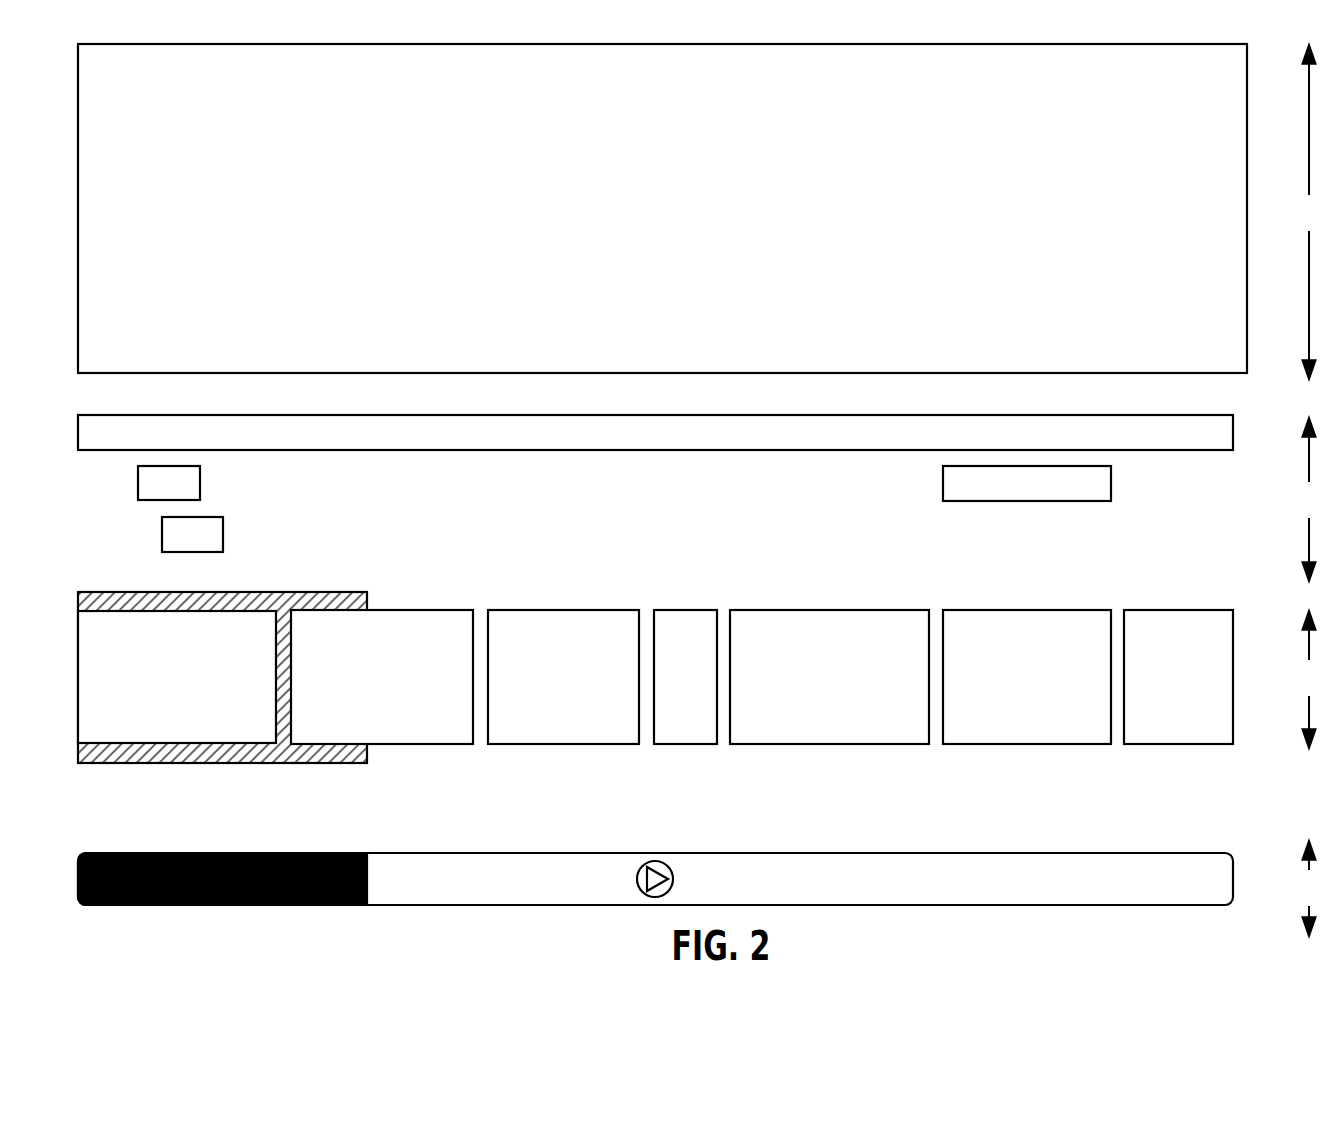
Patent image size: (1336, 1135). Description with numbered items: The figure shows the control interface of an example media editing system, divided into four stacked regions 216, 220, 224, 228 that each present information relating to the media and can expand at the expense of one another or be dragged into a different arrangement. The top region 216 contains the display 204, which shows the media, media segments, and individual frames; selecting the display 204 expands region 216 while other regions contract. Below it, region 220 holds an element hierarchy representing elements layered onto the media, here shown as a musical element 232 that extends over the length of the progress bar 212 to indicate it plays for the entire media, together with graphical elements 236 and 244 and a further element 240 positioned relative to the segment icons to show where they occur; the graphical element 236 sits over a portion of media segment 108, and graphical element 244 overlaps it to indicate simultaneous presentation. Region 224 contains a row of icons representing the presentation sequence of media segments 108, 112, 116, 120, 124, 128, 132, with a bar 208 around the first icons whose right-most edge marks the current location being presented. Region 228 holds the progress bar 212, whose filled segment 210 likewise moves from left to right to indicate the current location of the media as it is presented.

The display 204 is at (118, 76).
The musical element 232 is at (673, 444).
The graphical element 236 is at (187, 494).
The element 240 is at (210, 546).
The graphical element 244 is at (1045, 494).
The bar 208 is at (213, 592).
The media segment 108 is at (195, 690).
The media segment 112 is at (400, 690).
The media segment 116 is at (581, 690).
The media segment 120 is at (703, 690).
The media segment 124 is at (846, 690).
The media segment 128 is at (1045, 690).
The media segment 132 is at (1196, 690).
The segment 210 is at (210, 852).
The progress bar 212 is at (419, 852).
The region 216 is at (1309, 212).
The region 220 is at (1309, 499).
The region 224 is at (1309, 679).
The region 228 is at (1309, 888).